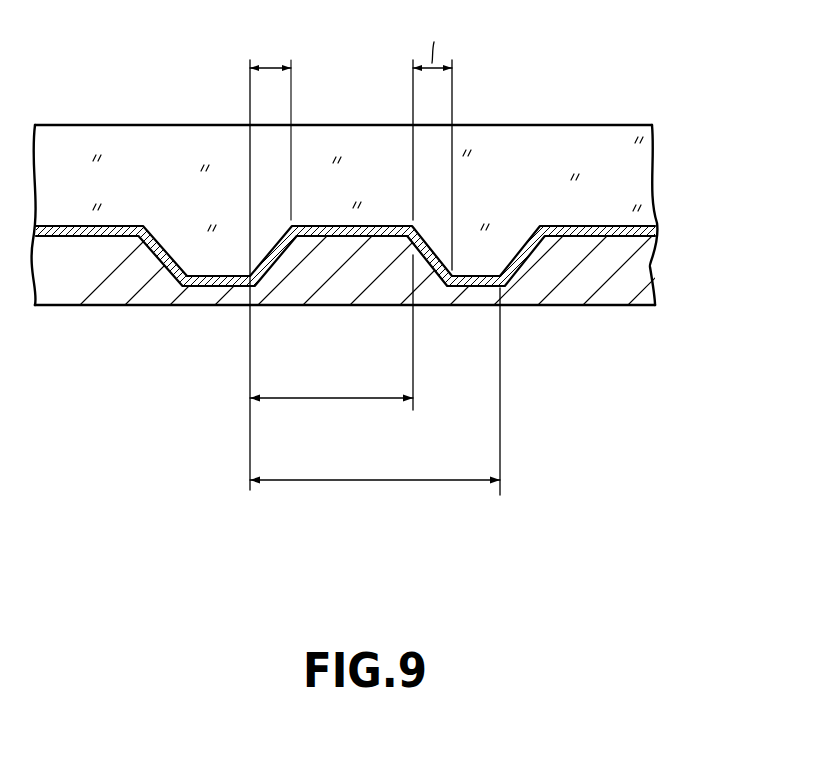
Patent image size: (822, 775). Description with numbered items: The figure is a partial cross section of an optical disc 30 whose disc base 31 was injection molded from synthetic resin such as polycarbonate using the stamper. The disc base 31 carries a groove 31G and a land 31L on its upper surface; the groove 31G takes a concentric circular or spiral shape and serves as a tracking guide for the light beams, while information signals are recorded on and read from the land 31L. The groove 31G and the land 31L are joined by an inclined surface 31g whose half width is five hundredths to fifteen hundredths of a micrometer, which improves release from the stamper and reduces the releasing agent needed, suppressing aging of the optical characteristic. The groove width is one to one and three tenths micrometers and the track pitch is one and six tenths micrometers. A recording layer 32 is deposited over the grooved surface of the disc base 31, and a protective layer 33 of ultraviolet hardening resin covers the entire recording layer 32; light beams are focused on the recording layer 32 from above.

The optical disc 30 is at (34, 320).
The disc base 31 is at (638, 178).
The land 31L is at (198, 274).
The groove 31G is at (347, 225).
The inclined surface 31g is at (278, 242).
The recording layer 32 is at (652, 227).
The protective layer 33 is at (633, 277).